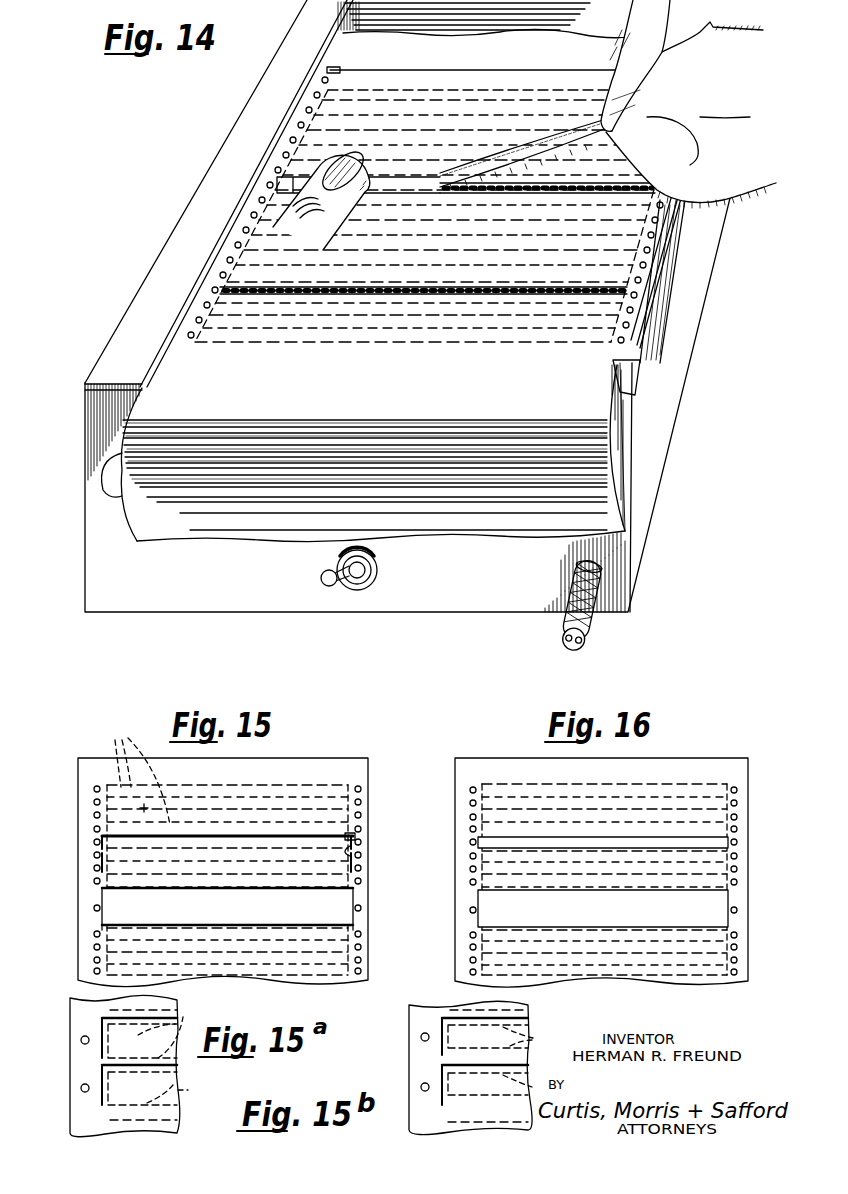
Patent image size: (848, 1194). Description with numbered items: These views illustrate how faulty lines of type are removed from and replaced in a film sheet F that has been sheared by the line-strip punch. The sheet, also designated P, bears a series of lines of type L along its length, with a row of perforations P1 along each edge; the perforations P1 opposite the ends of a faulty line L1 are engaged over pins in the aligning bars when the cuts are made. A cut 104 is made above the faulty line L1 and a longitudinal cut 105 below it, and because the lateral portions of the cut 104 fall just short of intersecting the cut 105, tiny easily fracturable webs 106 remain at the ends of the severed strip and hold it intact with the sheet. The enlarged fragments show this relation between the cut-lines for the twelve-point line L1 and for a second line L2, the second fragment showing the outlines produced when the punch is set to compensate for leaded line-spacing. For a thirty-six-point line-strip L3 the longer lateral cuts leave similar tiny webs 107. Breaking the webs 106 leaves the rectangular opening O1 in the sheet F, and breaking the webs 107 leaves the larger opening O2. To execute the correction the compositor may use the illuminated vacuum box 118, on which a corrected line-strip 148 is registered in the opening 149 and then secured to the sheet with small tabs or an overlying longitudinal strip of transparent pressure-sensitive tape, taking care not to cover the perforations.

In FIG. 14, the illuminated vacuum box 118 is at (136, 613).
In FIG. 14, the corrected line-strip 148 is at (524, 165).
In FIG. 14, the opening 149 is at (638, 194).
In FIG. 14, the film sheet F is at (197, 375).
In FIG. 15, the film sheet F is at (333, 758).
In FIG. 16, the film sheet F is at (692, 758).
In FIG. 15A, the film sheet F is at (70, 1120).
In FIG. 15B, the film sheet F is at (410, 1017).
In FIG. 15, the film sheet P is at (60, 795).
In FIG. 15, the perforations P1 is at (65, 846).
In FIG. 16, the perforations P1 is at (765, 854).
In FIG. 15A, the perforations P1 is at (80, 1040).
In FIG. 15, the printed lines L is at (136, 778).
In FIG. 15, the faulty line L1 is at (100, 837).
In FIG. 15A, the faulty line L1 is at (168, 1029).
In FIG. 15B, the faulty line L1 is at (530, 1035).
In FIG. 15, the second label line L2 is at (108, 870).
In FIG. 15A, the second label line L2 is at (176, 1091).
In FIG. 15B, the second label line L2 is at (527, 1085).
In FIG. 15, the 36-point line-strip L3 is at (335, 913).
In FIG. 15, the cut 104 is at (355, 837).
In FIG. 15A, the cut 104 is at (102, 1018).
In FIG. 15B, the cut 104 is at (463, 1018).
In FIG. 15, the longitudinal cut 105 is at (350, 853).
In FIG. 15A, the longitudinal cut 105 is at (118, 1076).
In FIG. 15B, the longitudinal cut 105 is at (467, 1067).
In FIG. 15, the webs 106 is at (64, 860).
In FIG. 15A, the webs 106 is at (95, 1060).
In FIG. 15B, the webs 106 is at (436, 1058).
In FIG. 15, the webs 107 is at (62, 931).
In FIG. 16, the opening O1 is at (722, 842).
In FIG. 16, the opening O2 is at (717, 915).